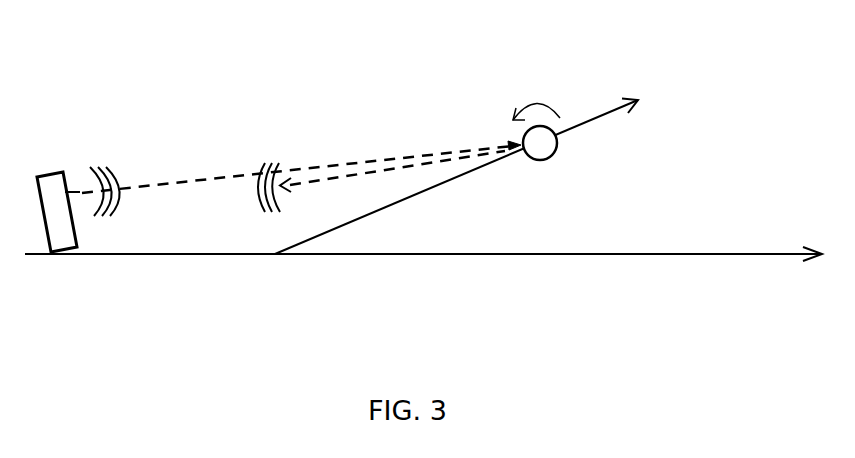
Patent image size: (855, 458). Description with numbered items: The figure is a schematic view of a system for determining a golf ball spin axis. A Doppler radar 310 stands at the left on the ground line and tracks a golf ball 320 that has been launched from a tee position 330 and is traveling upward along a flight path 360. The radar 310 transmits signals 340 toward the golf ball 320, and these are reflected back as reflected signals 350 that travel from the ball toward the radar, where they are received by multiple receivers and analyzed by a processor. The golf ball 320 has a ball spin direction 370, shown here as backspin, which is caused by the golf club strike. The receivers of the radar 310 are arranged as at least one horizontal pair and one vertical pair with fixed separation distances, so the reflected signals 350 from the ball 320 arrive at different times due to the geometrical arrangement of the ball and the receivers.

The Doppler radar 310 is at (113, 135).
The golf ball 320 is at (645, 177).
The tee position 330 is at (275, 254).
The transmitted signals 340 is at (125, 173).
The reflected signals 350 is at (258, 200).
The flight path 360 is at (615, 113).
The ball spin direction 370 is at (543, 98).